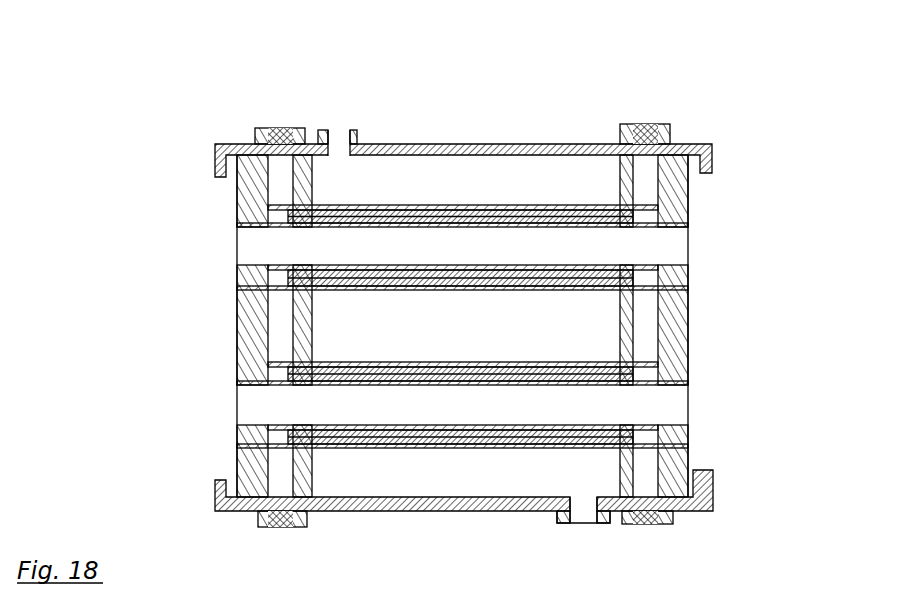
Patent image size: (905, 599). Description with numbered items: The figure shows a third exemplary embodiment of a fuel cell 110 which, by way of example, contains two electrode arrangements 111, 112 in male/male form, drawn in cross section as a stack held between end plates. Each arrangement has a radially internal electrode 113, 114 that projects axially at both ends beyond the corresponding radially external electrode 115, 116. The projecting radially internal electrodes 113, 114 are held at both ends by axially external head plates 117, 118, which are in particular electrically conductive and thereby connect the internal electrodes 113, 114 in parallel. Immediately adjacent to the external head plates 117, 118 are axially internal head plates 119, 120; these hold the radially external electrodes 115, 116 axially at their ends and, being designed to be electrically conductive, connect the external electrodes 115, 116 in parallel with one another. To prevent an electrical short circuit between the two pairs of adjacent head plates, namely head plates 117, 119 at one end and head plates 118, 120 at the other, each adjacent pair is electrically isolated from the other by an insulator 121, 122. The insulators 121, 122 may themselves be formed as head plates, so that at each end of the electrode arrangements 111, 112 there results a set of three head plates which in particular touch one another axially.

The fuel cell 110 is at (440, 308).
The electrode arrangement 111 is at (407, 162).
The electrode arrangement 112 is at (392, 495).
The radially internal electrode 113 is at (238, 225).
The radially internal electrode 114 is at (242, 432).
The radially external electrode 115 is at (288, 293).
The radially external electrode 116 is at (290, 448).
The axially external head plate 117 is at (238, 197).
The axially external head plate 118 is at (662, 170).
The axially internal head plate 119 is at (312, 511).
The axially internal head plate 120 is at (617, 153).
The insulator 121 is at (276, 122).
The insulator 122 is at (647, 125).